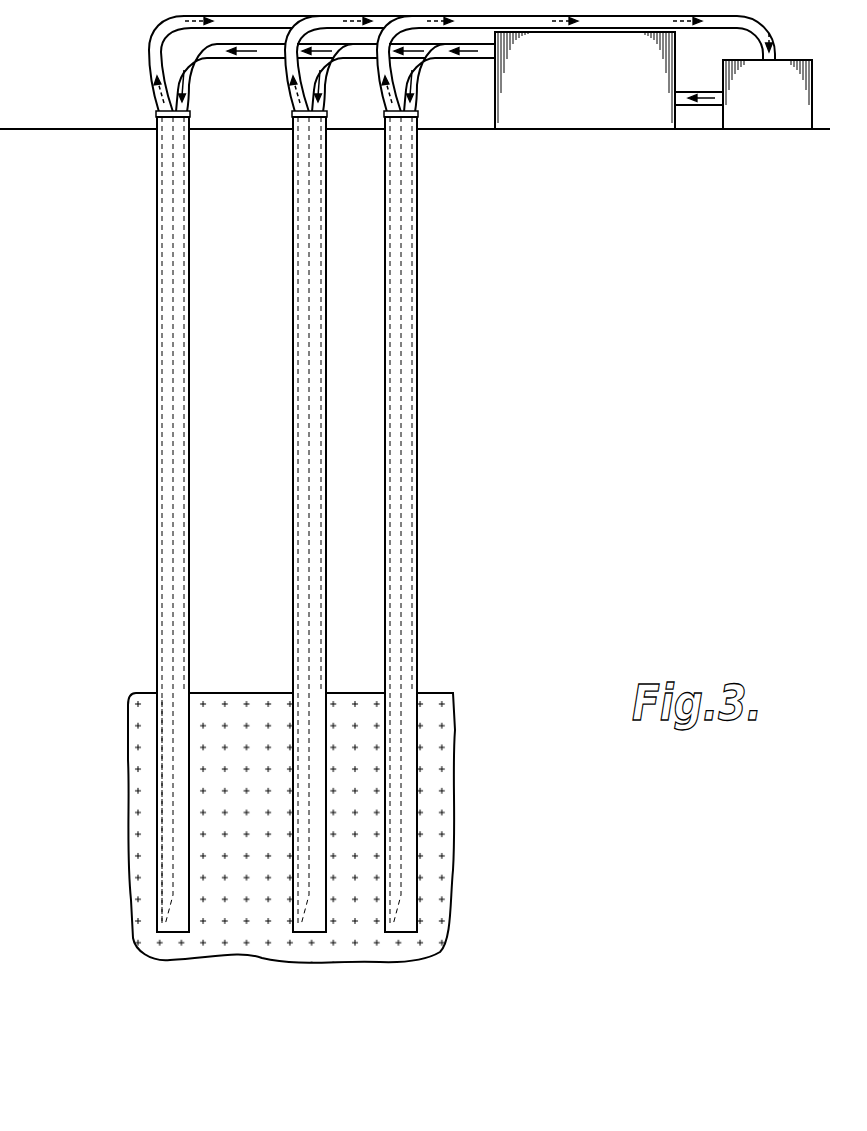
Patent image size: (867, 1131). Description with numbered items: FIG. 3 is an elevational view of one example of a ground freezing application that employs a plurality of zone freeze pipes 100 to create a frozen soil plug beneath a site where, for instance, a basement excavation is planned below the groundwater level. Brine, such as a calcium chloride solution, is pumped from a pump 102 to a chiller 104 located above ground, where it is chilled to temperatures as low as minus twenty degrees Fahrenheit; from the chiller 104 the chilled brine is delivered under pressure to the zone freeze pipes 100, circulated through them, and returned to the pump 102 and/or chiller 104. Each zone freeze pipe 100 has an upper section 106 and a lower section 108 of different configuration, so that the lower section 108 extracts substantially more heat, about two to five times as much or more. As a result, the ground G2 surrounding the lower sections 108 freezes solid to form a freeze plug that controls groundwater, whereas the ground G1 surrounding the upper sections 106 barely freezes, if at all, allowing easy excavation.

The zone freeze pipe 100 is at (157, 507).
The pump 102 is at (789, 108).
The chiller 104 is at (600, 88).
The upper section 106 is at (157, 432).
The lower section 108 is at (160, 777).
The ground G1 is at (88, 245).
The ground G2 is at (133, 871).